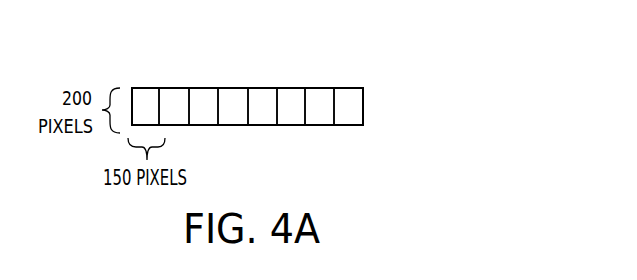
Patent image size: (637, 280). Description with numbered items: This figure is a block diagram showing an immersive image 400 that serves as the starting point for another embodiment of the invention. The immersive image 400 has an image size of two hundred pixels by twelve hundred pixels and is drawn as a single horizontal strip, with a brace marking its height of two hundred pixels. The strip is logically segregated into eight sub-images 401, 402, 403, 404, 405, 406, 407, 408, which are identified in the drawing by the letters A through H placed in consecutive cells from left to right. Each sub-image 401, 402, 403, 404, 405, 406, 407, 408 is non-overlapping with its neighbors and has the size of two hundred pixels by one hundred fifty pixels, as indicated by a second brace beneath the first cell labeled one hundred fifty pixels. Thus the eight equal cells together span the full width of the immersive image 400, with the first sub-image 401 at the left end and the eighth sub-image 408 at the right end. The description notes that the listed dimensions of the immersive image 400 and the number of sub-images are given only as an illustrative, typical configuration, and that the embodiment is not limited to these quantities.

The immersive image 400 is at (368, 104).
The sub-image 401 is at (135, 88).
The sub-image 402 is at (175, 88).
The sub-image 403 is at (203, 88).
The sub-image 404 is at (242, 88).
The sub-image 405 is at (260, 88).
The sub-image 406 is at (292, 88).
The sub-image 407 is at (318, 88).
The sub-image 408 is at (355, 88).